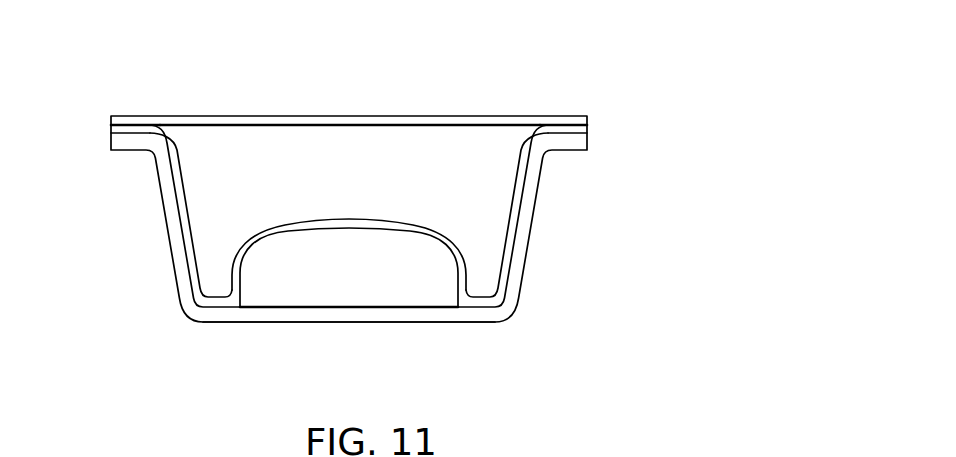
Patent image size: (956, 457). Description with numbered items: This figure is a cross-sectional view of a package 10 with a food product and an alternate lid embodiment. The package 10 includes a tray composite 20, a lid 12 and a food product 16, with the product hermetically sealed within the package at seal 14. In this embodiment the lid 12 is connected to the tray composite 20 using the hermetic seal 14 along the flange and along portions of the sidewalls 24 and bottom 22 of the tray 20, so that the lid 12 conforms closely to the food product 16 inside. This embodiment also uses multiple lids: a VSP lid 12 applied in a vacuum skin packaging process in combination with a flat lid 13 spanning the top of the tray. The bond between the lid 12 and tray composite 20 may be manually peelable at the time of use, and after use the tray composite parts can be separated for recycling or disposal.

The package 10 is at (545, 92).
The lid 12 is at (131, 131).
The flat lid 13 is at (257, 117).
The hermetic seal 14 is at (568, 135).
The food product 16 is at (352, 248).
The tray composite 20 is at (427, 330).
The bottom 22 is at (310, 323).
The sidewalls 24 is at (532, 232).